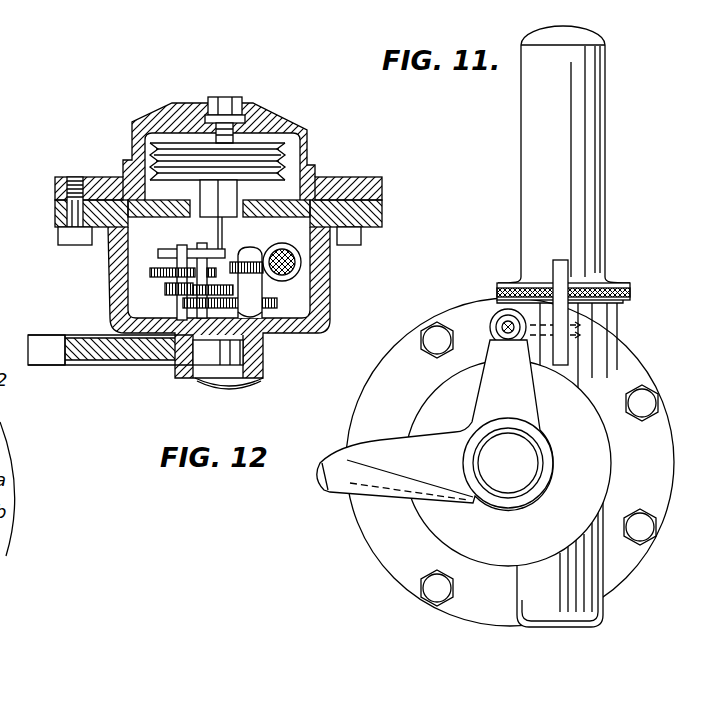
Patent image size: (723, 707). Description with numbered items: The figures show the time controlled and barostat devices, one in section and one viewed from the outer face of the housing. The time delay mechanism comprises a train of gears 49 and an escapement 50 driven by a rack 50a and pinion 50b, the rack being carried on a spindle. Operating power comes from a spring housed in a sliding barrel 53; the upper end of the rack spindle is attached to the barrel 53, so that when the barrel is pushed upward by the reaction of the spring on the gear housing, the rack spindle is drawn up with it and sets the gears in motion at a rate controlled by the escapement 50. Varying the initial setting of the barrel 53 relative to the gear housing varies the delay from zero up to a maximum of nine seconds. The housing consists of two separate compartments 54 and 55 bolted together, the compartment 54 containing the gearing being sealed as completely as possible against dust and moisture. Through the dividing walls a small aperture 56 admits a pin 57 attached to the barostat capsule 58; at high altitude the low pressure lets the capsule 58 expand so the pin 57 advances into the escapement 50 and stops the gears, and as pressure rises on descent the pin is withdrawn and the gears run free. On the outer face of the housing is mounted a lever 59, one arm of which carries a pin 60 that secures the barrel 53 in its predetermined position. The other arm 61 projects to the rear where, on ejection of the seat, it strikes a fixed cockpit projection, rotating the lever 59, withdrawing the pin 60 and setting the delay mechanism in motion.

In FIG. 12, the train of gears 49 is at (177, 293).
In FIG. 12, the escapement 50 is at (158, 255).
In FIG. 12, the rack 50a is at (292, 258).
In FIG. 12, the pinion 50b is at (297, 273).
In FIG. 11, the sliding barrel 53 is at (521, 165).
In FIG. 12, the compartment 54 is at (302, 302).
In FIG. 11, the compartment 54 is at (607, 455).
In FIG. 12, the compartment 55 is at (310, 188).
In FIG. 12, the aperture 56 is at (245, 215).
In FIG. 12, the pin 57 is at (207, 223).
In FIG. 12, the barostat capsule 58 is at (247, 150).
In FIG. 11, the lever 59 is at (534, 407).
In FIG. 11, the pin 60 is at (524, 344).
In FIG. 12, the arm 61 is at (105, 355).
In FIG. 11, the arm 61 is at (418, 443).